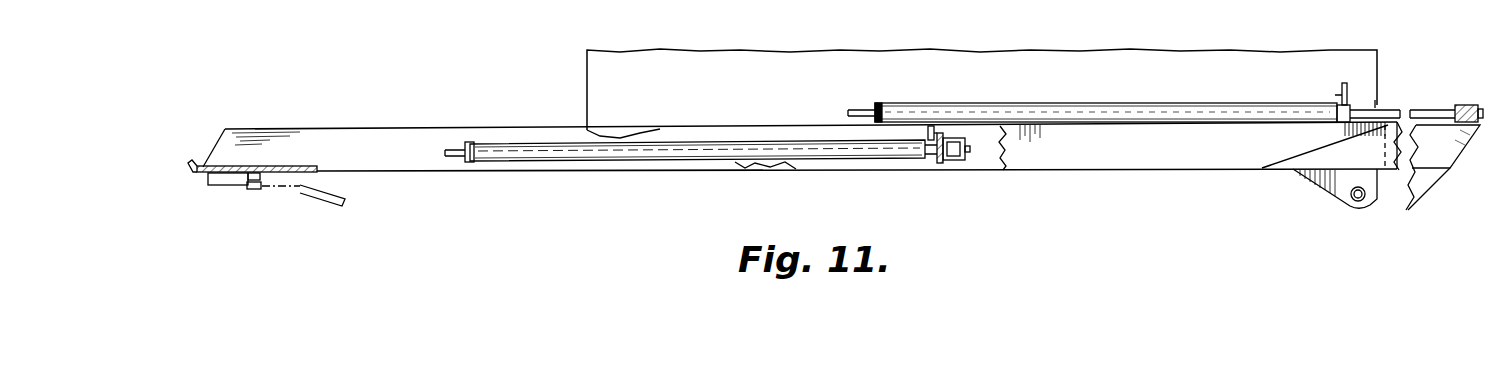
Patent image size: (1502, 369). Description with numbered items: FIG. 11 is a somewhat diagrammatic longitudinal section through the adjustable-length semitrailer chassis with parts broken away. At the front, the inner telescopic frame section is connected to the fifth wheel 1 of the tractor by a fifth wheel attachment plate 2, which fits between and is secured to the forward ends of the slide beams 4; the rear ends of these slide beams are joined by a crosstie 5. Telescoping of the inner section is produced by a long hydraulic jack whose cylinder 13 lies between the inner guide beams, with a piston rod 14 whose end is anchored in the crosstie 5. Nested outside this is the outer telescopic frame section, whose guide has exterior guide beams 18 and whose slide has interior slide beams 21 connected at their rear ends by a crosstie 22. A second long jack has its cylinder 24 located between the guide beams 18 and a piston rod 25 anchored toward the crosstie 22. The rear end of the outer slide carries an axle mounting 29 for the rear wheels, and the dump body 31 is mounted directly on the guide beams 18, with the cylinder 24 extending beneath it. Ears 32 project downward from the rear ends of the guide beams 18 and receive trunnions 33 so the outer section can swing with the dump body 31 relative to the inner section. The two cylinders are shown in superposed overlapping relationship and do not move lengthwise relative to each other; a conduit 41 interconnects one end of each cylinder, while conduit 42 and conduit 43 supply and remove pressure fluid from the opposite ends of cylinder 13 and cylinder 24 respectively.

The fifth wheel 1 is at (240, 182).
The fifth wheel attachment plate 2 is at (233, 165).
The slide beams 4 is at (370, 129).
The crosstie 5 is at (960, 162).
The cylinder 13 is at (622, 157).
The piston rod 14 is at (940, 150).
The exterior guide beams 18 is at (1138, 157).
The interior slide beams 21 is at (1442, 147).
The crosstie 22 is at (1457, 103).
The cylinder 24 is at (1090, 115).
The piston rod 25 is at (1417, 108).
The axle mounting 29 is at (1407, 198).
The dump body 31 is at (700, 50).
The ears 32 is at (1340, 187).
The trunnions 33 is at (1353, 203).
The conduit 41 is at (928, 128).
The conduit 42 is at (452, 148).
The conduit 43 is at (862, 108).